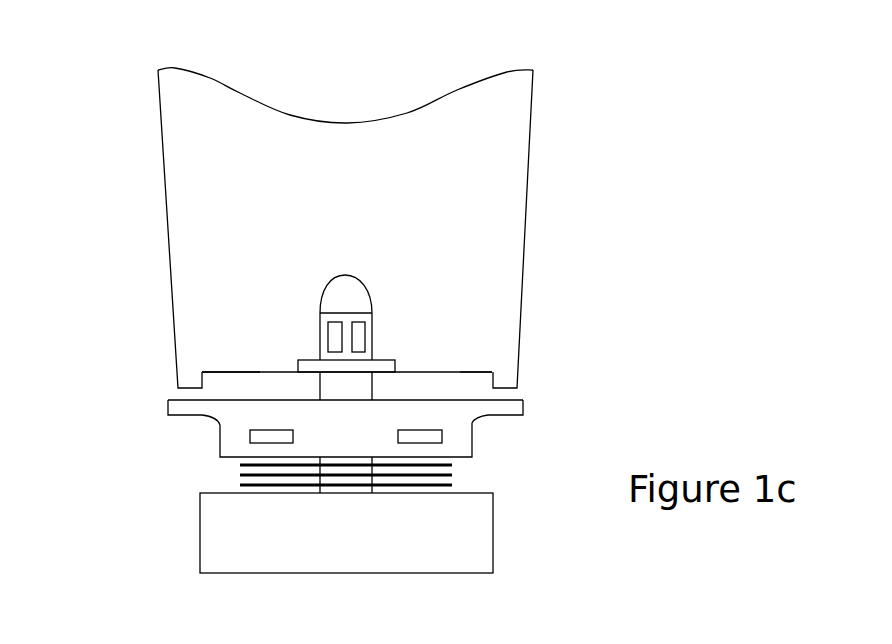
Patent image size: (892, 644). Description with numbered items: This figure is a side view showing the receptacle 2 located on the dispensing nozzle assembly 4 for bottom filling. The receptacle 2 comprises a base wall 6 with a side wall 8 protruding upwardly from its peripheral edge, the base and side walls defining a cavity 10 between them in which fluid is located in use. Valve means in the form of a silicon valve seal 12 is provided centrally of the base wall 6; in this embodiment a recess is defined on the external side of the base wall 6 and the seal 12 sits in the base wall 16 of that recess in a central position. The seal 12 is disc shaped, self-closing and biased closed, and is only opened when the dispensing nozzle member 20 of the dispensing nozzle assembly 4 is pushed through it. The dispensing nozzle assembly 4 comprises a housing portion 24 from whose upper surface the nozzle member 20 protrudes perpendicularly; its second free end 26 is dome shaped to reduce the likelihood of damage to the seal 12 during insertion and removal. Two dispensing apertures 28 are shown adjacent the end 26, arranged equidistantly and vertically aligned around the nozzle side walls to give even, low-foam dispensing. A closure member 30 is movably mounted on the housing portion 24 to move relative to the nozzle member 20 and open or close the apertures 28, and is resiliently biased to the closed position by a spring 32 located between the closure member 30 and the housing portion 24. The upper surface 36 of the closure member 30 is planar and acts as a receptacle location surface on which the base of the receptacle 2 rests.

The receptacle 2 is at (582, 159).
The dispensing nozzle assembly 4 is at (525, 536).
The base wall 6 is at (444, 390).
The side wall 8 is at (168, 257).
The cavity 10 is at (255, 162).
The silicon valve seal 12 is at (303, 365).
The base wall of the recess 16 is at (223, 374).
The dispensing nozzle member 20 is at (399, 311).
The housing portion 24 is at (217, 532).
The second free end 26 is at (365, 285).
The dispensing apertures 28 is at (327, 332).
The closure member 30 is at (494, 429).
The spring 32 is at (242, 475).
The upper surface 36 is at (498, 391).